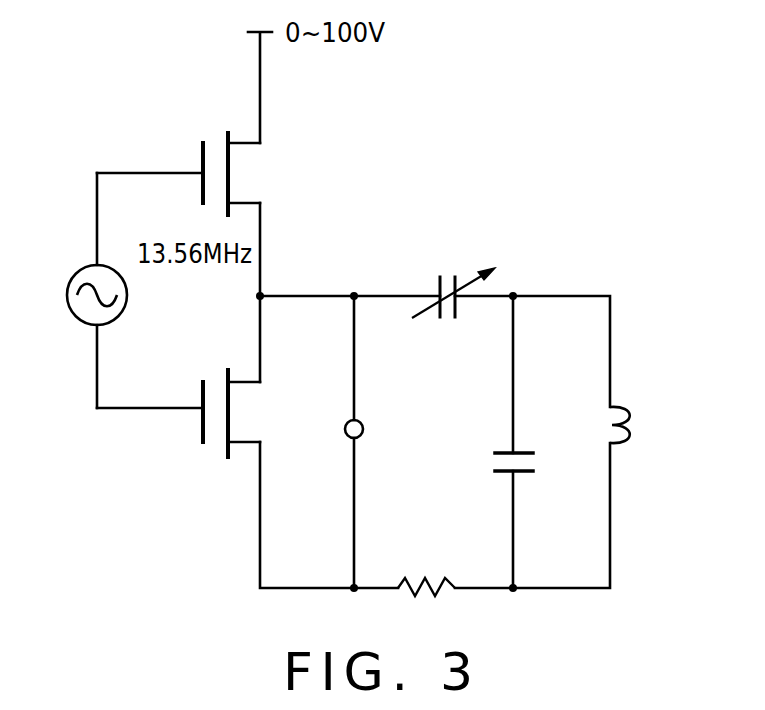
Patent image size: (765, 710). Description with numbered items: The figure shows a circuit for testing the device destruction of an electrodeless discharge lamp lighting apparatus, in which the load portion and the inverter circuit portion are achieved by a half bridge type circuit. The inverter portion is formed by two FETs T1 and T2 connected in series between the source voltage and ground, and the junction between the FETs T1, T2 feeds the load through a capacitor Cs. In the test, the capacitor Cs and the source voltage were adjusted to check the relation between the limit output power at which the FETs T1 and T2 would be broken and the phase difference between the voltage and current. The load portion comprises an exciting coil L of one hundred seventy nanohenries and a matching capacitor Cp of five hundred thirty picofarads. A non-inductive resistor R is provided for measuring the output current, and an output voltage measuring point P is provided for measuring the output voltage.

The FET T1 is at (246, 180).
The FET T2 is at (236, 418).
The capacitor Cs is at (453, 279).
The output voltage measuring point P is at (363, 429).
The matching capacitor Cp is at (536, 461).
The exciting coil L is at (636, 432).
The non-inductive resistor R is at (427, 576).